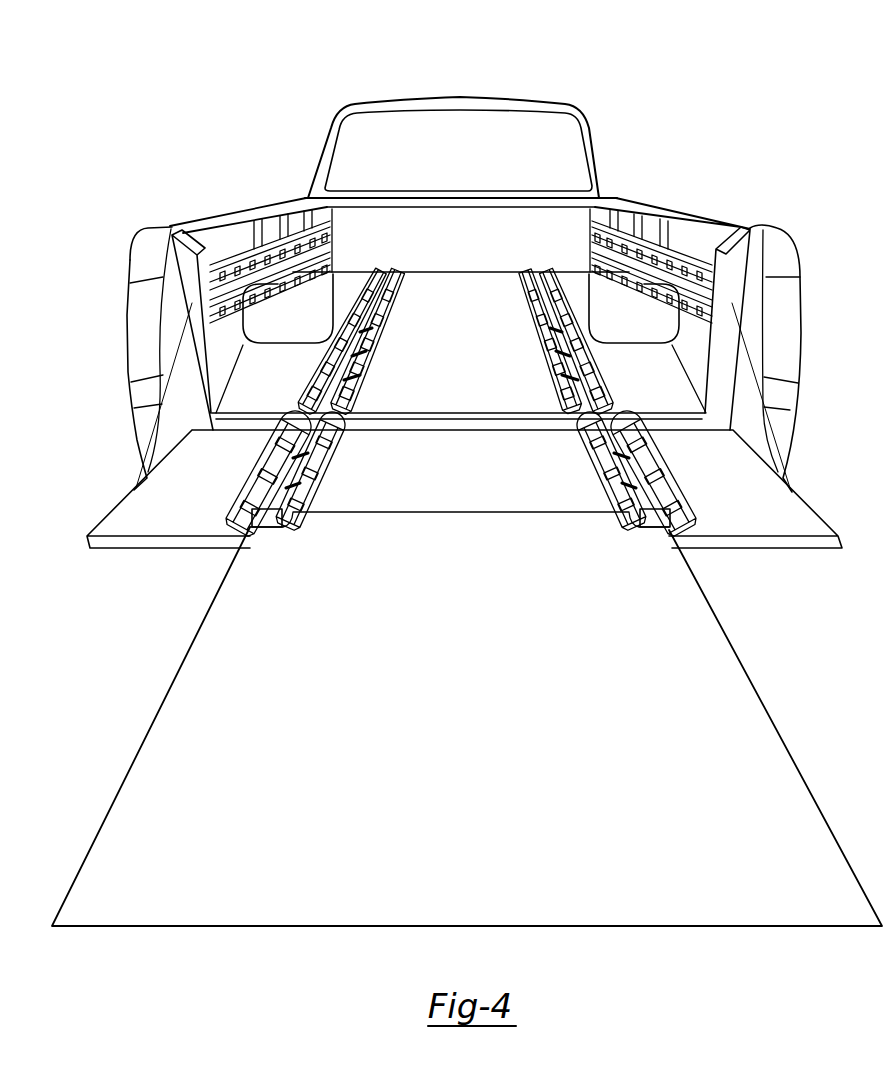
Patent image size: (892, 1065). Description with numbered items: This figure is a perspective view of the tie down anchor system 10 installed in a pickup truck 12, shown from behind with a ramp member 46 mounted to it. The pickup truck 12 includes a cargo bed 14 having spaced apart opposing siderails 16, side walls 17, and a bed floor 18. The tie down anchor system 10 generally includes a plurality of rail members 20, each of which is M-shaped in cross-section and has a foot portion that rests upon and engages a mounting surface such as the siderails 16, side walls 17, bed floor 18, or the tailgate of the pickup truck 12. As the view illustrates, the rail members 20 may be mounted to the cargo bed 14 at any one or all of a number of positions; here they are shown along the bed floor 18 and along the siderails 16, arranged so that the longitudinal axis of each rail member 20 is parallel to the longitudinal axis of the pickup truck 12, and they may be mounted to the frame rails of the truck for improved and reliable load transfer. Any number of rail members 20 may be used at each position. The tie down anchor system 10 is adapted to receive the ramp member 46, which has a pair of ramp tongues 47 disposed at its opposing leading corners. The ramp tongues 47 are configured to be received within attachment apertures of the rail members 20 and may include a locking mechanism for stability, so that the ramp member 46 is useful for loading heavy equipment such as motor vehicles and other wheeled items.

The tie down anchor system 10 is at (709, 113).
The pickup truck 12 is at (503, 100).
The cargo bed 14 is at (298, 190).
The siderails 16 is at (187, 222).
The side walls 17 is at (232, 348).
The bed floor 18 is at (453, 388).
The rail members 20 is at (247, 253).
The ramp member 46 is at (450, 722).
The ramp tongues 47 is at (280, 516).